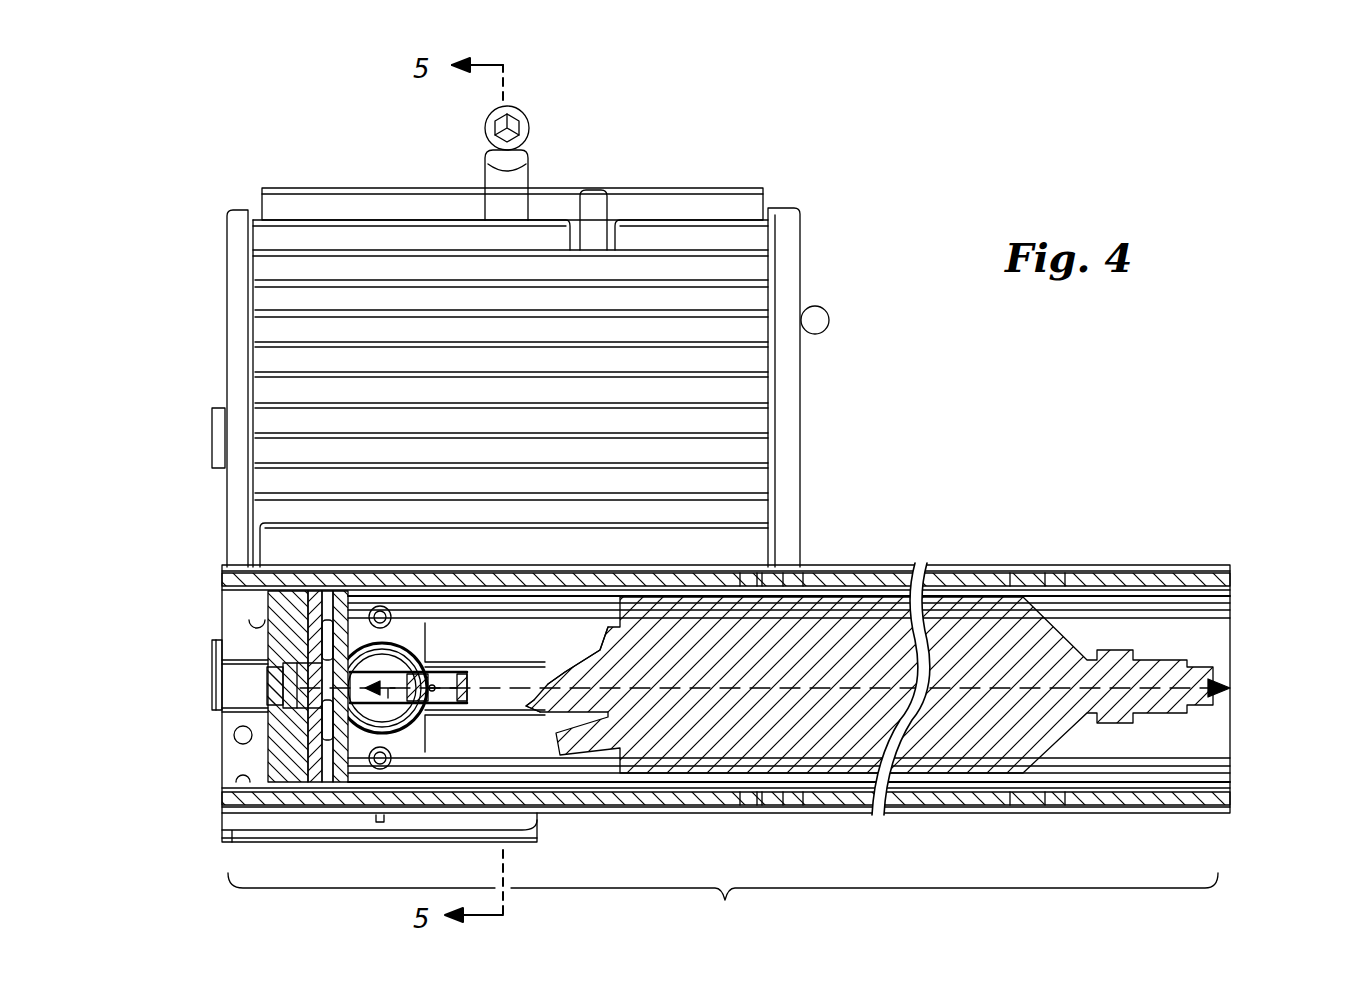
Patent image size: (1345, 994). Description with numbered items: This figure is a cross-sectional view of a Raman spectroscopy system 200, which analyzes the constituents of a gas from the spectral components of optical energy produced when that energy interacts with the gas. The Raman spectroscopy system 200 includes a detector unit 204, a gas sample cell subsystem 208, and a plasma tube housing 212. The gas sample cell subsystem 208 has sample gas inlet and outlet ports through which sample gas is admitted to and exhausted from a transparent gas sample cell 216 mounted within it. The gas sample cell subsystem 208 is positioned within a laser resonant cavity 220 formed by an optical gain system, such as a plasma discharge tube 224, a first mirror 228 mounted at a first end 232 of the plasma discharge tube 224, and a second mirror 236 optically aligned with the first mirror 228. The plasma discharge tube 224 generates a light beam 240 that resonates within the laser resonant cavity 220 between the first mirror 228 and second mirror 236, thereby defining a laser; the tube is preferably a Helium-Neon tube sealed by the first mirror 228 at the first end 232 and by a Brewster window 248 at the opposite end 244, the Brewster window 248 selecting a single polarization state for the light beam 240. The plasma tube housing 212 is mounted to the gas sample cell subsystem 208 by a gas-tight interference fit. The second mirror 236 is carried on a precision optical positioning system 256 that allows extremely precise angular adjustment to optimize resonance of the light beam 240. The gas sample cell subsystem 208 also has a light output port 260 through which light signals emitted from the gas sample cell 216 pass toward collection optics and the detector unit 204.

The Raman spectroscopy system 200 is at (890, 166).
The detector unit 204 is at (766, 190).
The gas sample cell subsystem 208 is at (413, 748).
The plasma tube housing 212 is at (855, 566).
The gas sample cell 216 is at (355, 722).
The laser resonant cavity 220 is at (723, 904).
The plasma discharge tube 224 is at (990, 602).
The first mirror 228 is at (1225, 673).
The first end 232 is at (1225, 635).
The second mirror 236 is at (272, 697).
The light beam 240 is at (490, 680).
The end 244 is at (515, 704).
The Brewster window 248 is at (565, 678).
The precision optical positioning system 256 is at (313, 670).
The light output port 260 is at (372, 660).